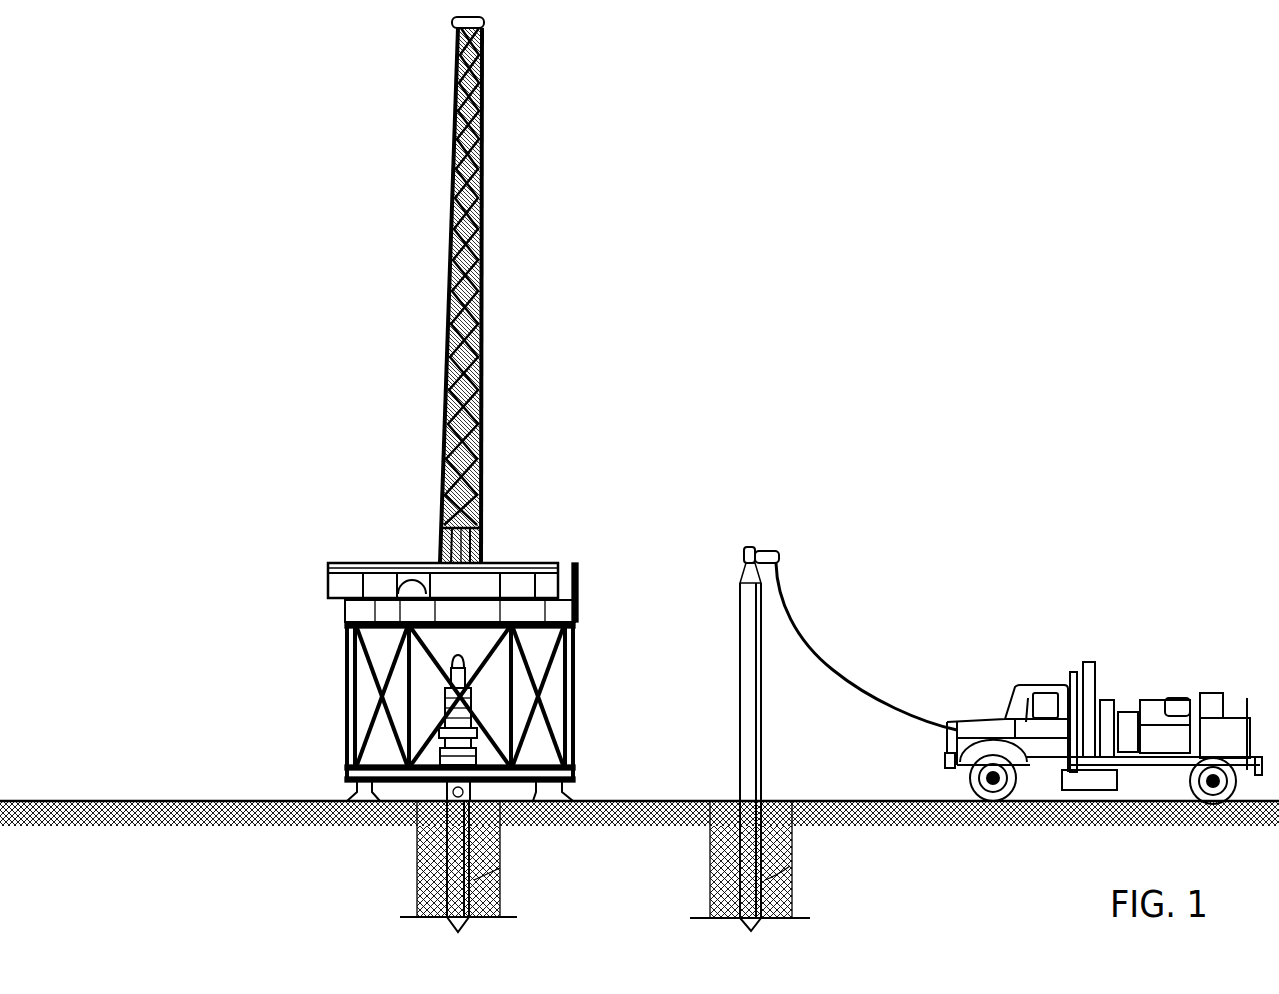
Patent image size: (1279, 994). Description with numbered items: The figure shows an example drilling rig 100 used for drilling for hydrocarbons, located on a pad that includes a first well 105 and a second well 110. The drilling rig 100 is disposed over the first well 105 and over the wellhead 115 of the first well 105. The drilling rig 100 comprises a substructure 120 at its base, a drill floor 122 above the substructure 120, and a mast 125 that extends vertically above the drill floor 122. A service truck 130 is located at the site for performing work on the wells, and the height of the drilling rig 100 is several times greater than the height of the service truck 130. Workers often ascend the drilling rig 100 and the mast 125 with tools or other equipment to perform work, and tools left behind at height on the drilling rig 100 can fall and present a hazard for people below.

The drilling rig 100 is at (344, 352).
The first well 105 is at (445, 805).
The second well 110 is at (738, 805).
The wellhead 115 is at (453, 729).
The substructure 120 is at (357, 637).
The drill floor 122 is at (551, 562).
The mast 125 is at (484, 289).
The service truck 130 is at (1048, 682).